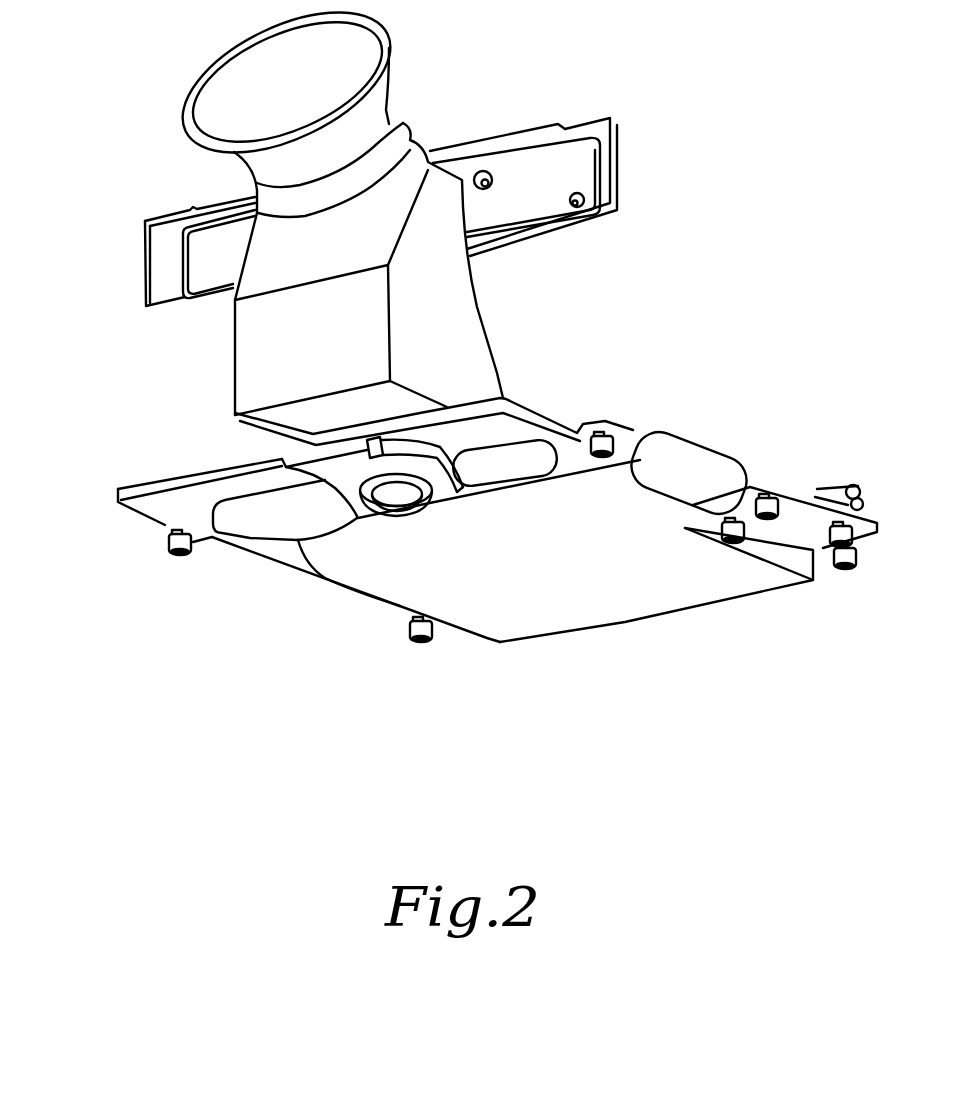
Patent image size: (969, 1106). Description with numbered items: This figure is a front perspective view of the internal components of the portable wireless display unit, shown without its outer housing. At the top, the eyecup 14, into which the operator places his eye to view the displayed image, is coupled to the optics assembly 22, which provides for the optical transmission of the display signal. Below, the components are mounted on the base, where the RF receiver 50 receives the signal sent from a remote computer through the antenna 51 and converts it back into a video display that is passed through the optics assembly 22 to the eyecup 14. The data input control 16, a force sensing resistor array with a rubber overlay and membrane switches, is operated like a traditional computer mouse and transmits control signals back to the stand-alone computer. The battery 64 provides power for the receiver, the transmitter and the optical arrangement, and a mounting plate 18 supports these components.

The eyecup 14 is at (213, 72).
The optics assembly 22 is at (118, 205).
The battery 64 is at (693, 440).
The base plate 18 is at (135, 512).
The data input control 16 is at (305, 528).
The antenna 51 is at (390, 603).
The RF receiver 50 is at (500, 642).